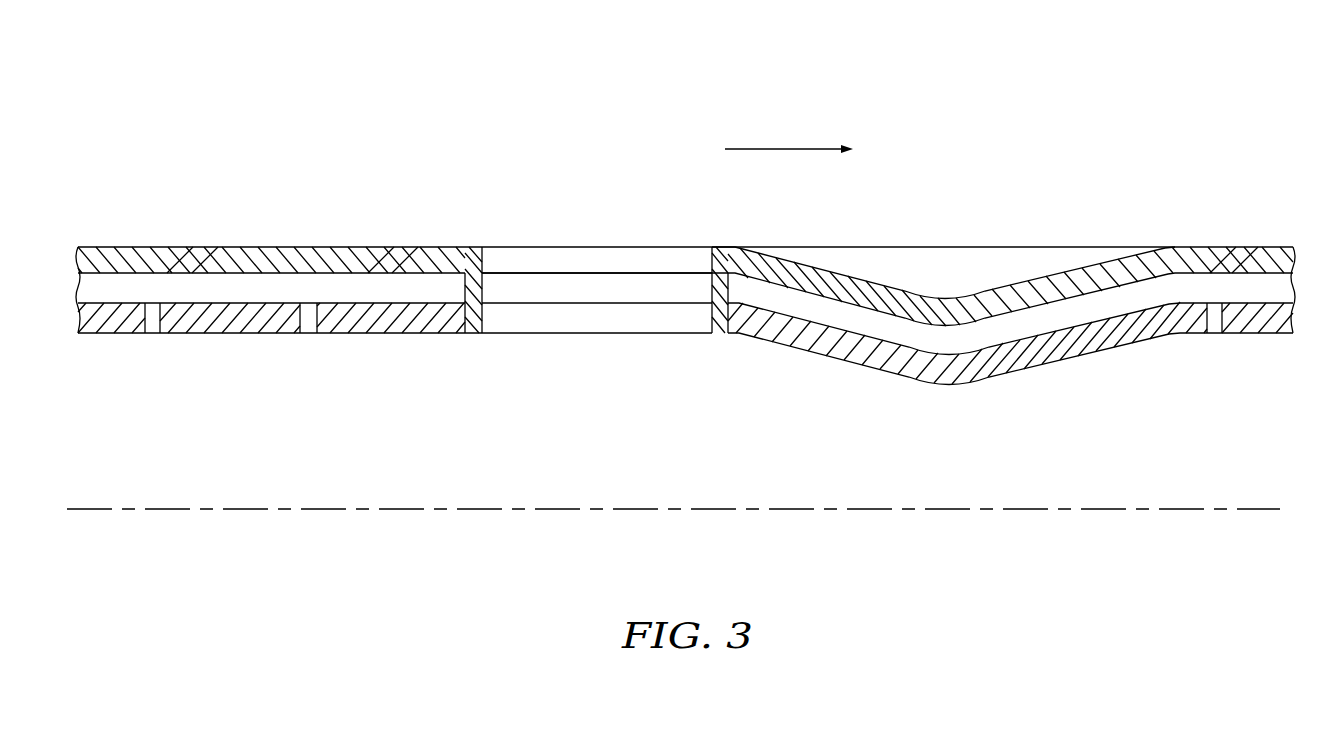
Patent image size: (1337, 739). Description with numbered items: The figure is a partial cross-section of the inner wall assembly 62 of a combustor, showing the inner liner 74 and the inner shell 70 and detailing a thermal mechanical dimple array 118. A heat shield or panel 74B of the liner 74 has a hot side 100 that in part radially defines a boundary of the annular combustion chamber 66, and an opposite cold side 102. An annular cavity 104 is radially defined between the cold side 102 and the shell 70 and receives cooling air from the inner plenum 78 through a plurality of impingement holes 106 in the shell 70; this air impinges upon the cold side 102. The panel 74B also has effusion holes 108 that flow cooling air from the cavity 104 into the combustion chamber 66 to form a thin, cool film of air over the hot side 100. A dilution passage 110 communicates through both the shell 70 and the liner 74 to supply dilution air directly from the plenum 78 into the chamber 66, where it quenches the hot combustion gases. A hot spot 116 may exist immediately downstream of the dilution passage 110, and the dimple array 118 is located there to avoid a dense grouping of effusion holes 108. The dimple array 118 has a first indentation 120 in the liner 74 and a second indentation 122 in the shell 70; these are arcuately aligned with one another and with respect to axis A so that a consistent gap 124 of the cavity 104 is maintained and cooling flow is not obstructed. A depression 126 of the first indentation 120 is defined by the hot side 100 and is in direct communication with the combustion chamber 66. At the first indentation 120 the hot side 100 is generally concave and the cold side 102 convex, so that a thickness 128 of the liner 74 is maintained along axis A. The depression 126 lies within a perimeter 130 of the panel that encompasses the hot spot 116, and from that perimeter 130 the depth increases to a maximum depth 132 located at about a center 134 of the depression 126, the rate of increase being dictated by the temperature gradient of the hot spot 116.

The inner wall assembly 62 is at (274, 147).
The annular combustion chamber 66 is at (1082, 148).
The inner shell 70 is at (208, 348).
The inner liner 74 is at (271, 238).
The aft panel 74B is at (430, 246).
The inner plenum 78 is at (460, 465).
The hot side 100 is at (325, 246).
The cold side 102 is at (385, 275).
The annular cavity 104 is at (788, 303).
The impingement holes 106 is at (160, 334).
The effusion holes 108 is at (246, 231).
The dilution passage 110 is at (583, 258).
The hot spot 116 is at (890, 256).
The thermal mechanical dimple array 118 is at (962, 296).
The first indentation 120 is at (1055, 283).
The second indentation 122 is at (935, 368).
The gap 124 is at (1037, 327).
The depression 126 is at (952, 347).
The thickness 128 is at (1021, 268).
The perimeter 130 is at (1173, 246).
The maximum depth 132 is at (950, 234).
The center 134 is at (982, 266).
The axis A is at (1188, 515).